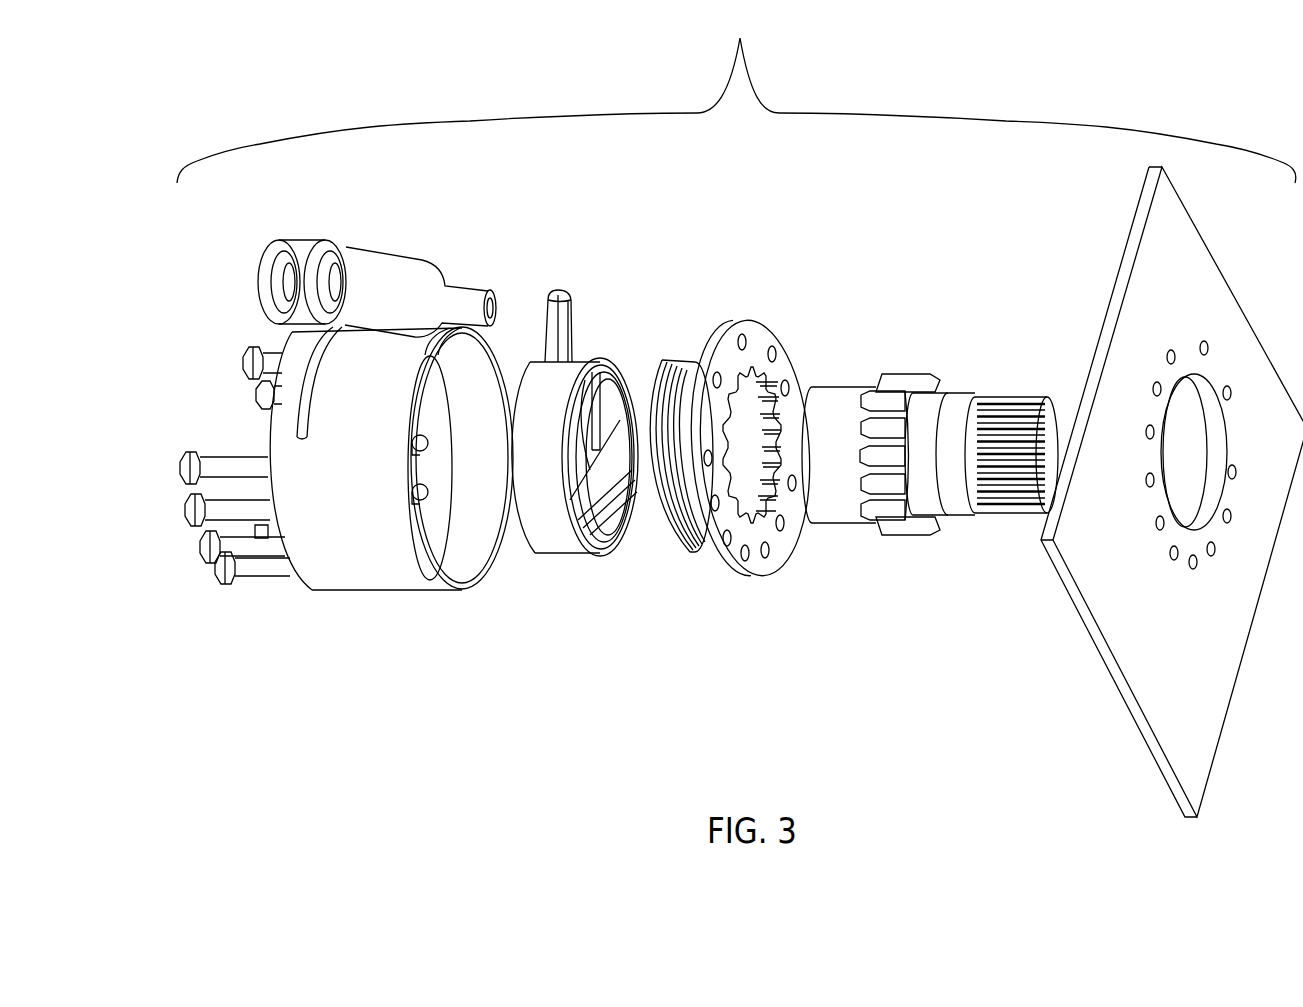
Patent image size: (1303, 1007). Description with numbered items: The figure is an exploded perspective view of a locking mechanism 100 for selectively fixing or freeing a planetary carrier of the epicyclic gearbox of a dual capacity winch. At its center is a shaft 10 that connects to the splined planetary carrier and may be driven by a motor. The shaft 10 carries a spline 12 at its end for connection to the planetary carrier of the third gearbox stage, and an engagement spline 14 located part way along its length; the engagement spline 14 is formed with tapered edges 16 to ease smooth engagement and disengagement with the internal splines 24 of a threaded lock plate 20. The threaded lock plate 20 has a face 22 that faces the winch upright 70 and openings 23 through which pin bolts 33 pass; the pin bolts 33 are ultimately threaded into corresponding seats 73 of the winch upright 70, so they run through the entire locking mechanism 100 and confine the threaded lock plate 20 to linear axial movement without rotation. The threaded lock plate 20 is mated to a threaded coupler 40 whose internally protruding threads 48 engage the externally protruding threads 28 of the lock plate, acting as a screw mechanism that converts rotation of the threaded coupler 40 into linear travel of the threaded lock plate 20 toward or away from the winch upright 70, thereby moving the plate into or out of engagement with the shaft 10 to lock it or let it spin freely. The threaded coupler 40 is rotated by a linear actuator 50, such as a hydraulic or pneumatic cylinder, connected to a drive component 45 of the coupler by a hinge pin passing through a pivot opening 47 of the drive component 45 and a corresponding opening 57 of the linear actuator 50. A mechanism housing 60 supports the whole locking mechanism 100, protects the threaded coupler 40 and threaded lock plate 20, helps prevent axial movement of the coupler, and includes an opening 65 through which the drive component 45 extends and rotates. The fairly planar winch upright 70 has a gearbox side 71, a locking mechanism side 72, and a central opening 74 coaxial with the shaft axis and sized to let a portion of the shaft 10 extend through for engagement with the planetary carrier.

The locking mechanism 100 is at (736, 98).
The shaft 10 is at (930, 386).
The spline 12 is at (1030, 397).
The engagement spline 14 is at (898, 415).
The tapered edges 16 is at (863, 413).
The threaded lock plate 20 is at (750, 433).
The face 22 is at (758, 345).
The openings 23 is at (745, 560).
The internal splines 24 is at (777, 412).
The externally protruding threads 28 is at (664, 378).
The pin bolts 33 is at (196, 520).
The threaded coupler 40 is at (572, 380).
The drive component 45 is at (548, 336).
The pivot opening 47 is at (563, 308).
The internally protruding threads 48 is at (627, 393).
The linear actuator 50 is at (388, 246).
The opening 57 is at (494, 306).
The mechanism housing 60 is at (392, 613).
The opening 65 is at (300, 420).
The winch upright 70 is at (1152, 478).
The gearbox side 71 is at (1188, 268).
The locking mechanism side 72 is at (1133, 226).
The seats 73 is at (1195, 562).
The opening 74 is at (1165, 496).